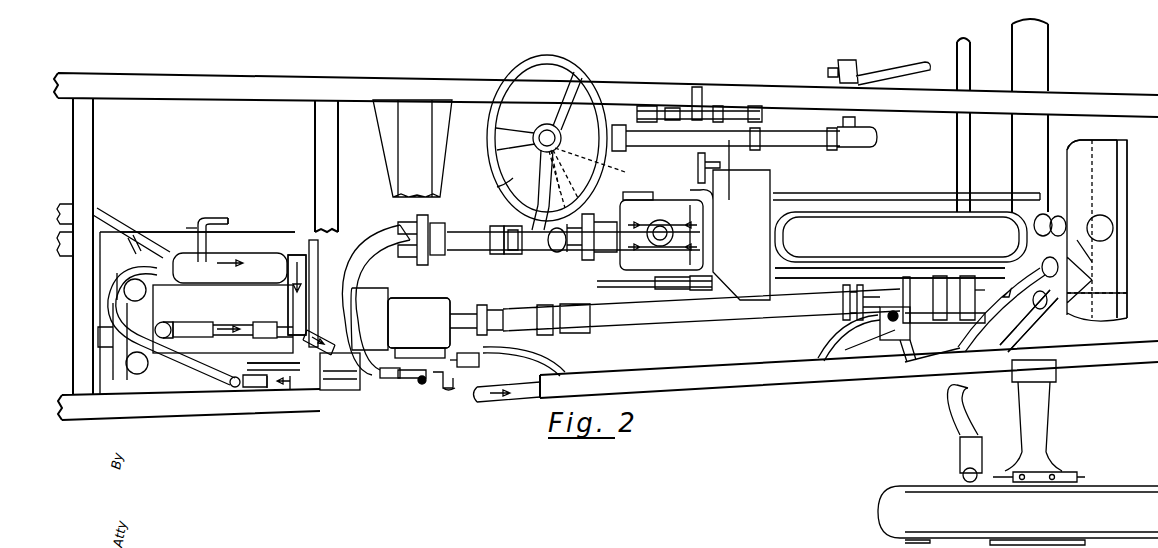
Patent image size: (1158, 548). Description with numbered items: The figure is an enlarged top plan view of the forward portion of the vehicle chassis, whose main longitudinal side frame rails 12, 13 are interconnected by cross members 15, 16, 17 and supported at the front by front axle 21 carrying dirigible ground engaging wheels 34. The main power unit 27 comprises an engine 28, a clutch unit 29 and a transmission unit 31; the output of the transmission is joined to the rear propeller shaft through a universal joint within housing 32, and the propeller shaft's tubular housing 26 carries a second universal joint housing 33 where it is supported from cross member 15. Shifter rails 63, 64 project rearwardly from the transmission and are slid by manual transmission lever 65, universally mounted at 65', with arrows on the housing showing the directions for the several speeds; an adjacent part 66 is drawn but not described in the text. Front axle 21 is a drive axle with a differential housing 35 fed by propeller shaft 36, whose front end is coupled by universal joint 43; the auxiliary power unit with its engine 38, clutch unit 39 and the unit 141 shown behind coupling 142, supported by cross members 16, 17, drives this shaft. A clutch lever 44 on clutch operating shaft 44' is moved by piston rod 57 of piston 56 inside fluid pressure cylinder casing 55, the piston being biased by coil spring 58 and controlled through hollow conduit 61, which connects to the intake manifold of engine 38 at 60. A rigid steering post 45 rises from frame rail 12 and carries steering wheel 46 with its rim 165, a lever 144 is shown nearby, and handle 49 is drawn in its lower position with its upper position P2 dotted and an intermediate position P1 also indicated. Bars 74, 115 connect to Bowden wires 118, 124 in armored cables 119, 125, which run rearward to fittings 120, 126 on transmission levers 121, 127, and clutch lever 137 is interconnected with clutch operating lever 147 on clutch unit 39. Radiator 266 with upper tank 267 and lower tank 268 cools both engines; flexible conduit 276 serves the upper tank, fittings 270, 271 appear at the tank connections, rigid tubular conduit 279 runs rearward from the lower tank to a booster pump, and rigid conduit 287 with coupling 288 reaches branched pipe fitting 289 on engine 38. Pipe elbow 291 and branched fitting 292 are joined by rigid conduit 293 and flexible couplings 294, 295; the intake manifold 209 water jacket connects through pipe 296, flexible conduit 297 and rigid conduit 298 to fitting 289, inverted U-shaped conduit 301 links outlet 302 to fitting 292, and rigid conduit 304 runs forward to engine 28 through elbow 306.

The main longitudinal side frame rail 12 is at (764, 97).
The main longitudinal side frame rail 13 is at (831, 378).
The cross member 15 is at (437, 172).
The cross member 16 is at (328, 173).
The cross member 17 is at (94, 176).
The front axle 21 is at (1056, 414).
The tubular housing 26 is at (264, 234).
The main power unit 27 is at (902, 192).
The engine 28 is at (901, 237).
The clutch unit 29 is at (730, 235).
The transmission unit 31 is at (680, 278).
The universal joint housing 32 is at (588, 214).
The second universal joint housing 33 is at (433, 214).
The ground engaging wheels 34 is at (1133, 486).
The differential housing 35 is at (940, 276).
The propeller shaft 36 is at (762, 323).
The engine 38 is at (199, 332).
The clutch unit 39 is at (345, 390).
The universal joint 43 is at (845, 290).
The lever 44 is at (980, 298).
The clutch operating shaft 44' is at (890, 258).
The steering post 45 is at (812, 145).
The steering wheel 46 is at (590, 72).
The handle 49 is at (506, 190).
The fluid pressure cylinder casing 55 is at (915, 362).
The piston 56 is at (920, 343).
The piston rod 57 is at (961, 302).
The coil spring 58 is at (889, 319).
The intake manifold connection 60 is at (181, 223).
The hollow conduit 61 is at (205, 218).
The shifter rail 63 is at (661, 231).
The shifter rail 64 is at (614, 257).
The manual transmission lever 65 is at (562, 252).
The universal mounting 65' is at (679, 234).
The coupling sleeve 66 is at (513, 255).
The bar 74 is at (499, 255).
The bar 115 is at (488, 231).
The Bowden wire 118 is at (430, 289).
The armored cable 119 is at (386, 270).
The fitting 120 is at (448, 386).
The transmission shifting lever 121 is at (456, 361).
The Bowden wire 124 is at (445, 233).
The armored cable 125 is at (405, 225).
The bifurcated fitting 126 is at (420, 385).
The transmission operating lever 127 is at (398, 378).
The lever 137 is at (700, 92).
The hydraulic motor 141 is at (428, 310).
The shaft coupling 142 is at (492, 312).
The hand lever 144 is at (732, 159).
The clutch operating lever 147 is at (392, 247).
The steering wheel rim 165 is at (493, 187).
The intake manifold 209 is at (270, 236).
The radiator 266 is at (1128, 195).
The upper tank 267 is at (1092, 143).
The lower tank 268 is at (1118, 318).
The port fittings 270 is at (1064, 220).
The pipe fitting 271 is at (1029, 318).
The flexible conduit 276 is at (1128, 295).
The rigid tubular conduit 279 is at (562, 372).
The rigid conduit 287 is at (285, 393).
The short flexible coupling 288 is at (262, 391).
The branched pipe fitting 289 is at (236, 388).
The pipe elbow 291 is at (180, 322).
The branched fitting 292 is at (312, 326).
The rigid conduit 293 is at (262, 312).
The short flexible coupling 294 is at (206, 320).
The short flexible coupling 295 is at (263, 340).
The pipe 296 is at (190, 245).
The flexible conduit 297 is at (124, 287).
The rigid conduit 298 is at (146, 369).
The inverted U-shaped conduit 301 is at (314, 285).
The outlet 302 is at (282, 295).
The rigid conduit 304 is at (1008, 290).
The elbow 306 is at (1034, 238).
The intermediate position P1 is at (562, 178).
The upper position P2 is at (595, 178).